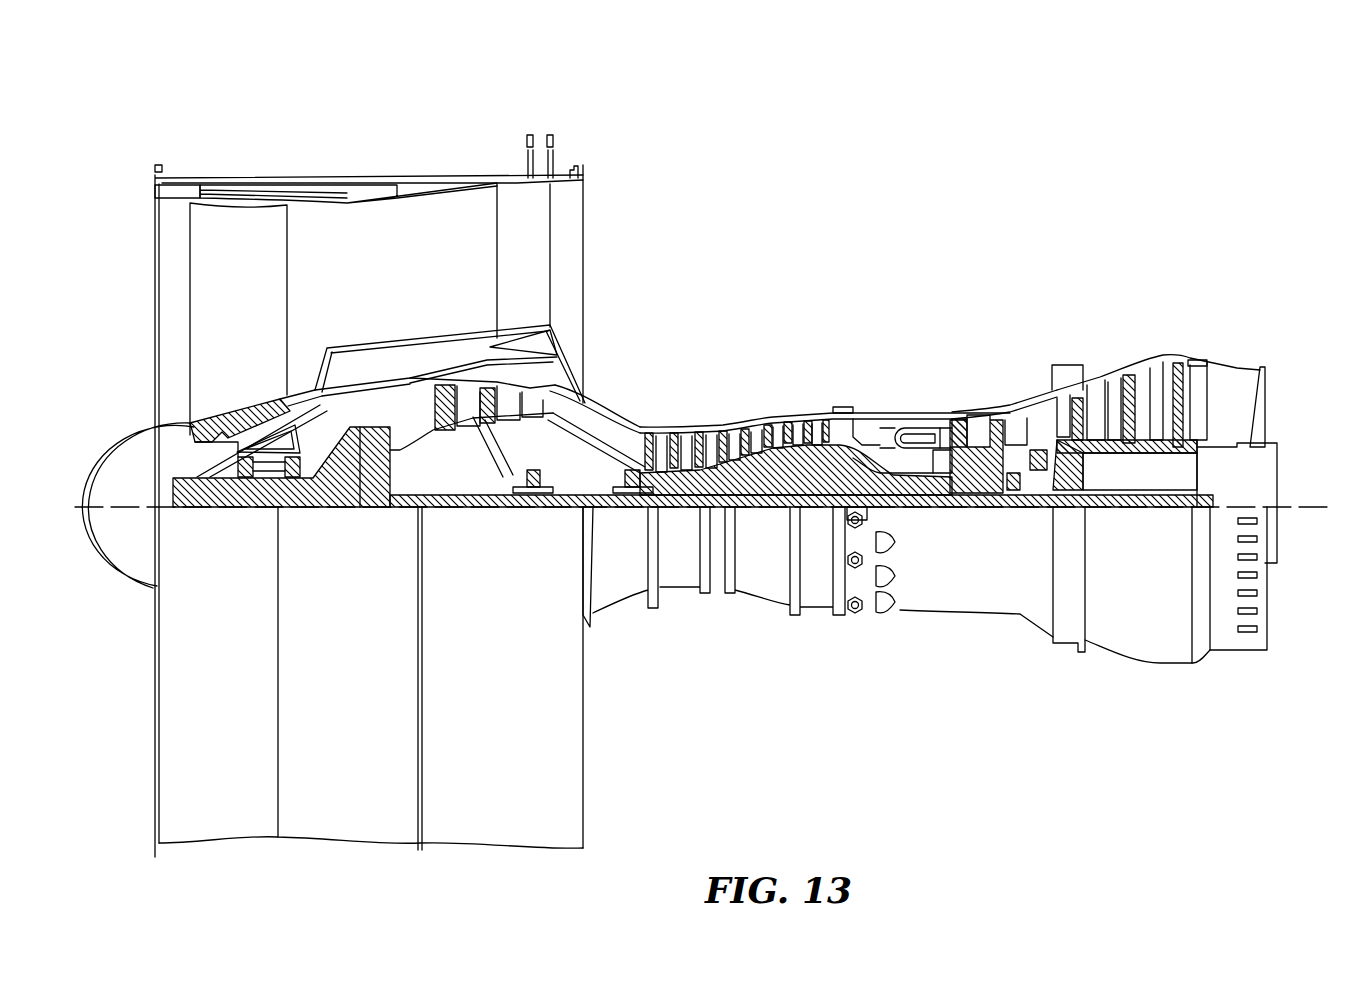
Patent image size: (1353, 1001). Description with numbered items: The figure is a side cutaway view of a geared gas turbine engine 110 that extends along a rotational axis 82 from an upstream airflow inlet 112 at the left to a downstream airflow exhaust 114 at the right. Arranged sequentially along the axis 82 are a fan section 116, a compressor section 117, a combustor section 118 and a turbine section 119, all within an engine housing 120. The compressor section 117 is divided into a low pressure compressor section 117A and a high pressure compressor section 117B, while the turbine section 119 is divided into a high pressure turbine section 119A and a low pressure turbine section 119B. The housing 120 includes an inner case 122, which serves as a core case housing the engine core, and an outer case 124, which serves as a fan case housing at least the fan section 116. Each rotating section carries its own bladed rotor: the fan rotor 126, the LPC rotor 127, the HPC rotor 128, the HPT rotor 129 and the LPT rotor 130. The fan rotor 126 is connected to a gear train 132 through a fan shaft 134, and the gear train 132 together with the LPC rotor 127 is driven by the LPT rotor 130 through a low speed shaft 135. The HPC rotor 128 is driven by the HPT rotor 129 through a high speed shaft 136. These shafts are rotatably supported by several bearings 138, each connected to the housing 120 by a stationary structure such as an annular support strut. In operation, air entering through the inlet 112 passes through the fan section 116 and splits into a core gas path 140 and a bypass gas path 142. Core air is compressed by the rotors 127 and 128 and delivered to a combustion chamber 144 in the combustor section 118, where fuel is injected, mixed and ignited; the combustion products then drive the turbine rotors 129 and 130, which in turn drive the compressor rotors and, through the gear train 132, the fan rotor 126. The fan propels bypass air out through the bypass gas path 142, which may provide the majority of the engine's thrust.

The geared gas turbine engine 110 is at (120, 156).
The airflow inlet 112 is at (155, 254).
The airflow exhaust 114 is at (1265, 402).
The fan section 116 is at (335, 151).
The compressor section 117 is at (818, 88).
The low pressure compressor section 117A is at (585, 138).
The high pressure compressor section 117B is at (612, 338).
The combustor section 118 is at (837, 336).
The turbine section 119 is at (952, 265).
The high pressure turbine section 119A is at (1033, 336).
The low pressure turbine section 119B is at (1220, 336).
The engine housing 120 is at (608, 628).
The inner case 122 is at (819, 612).
The outer case 124 is at (555, 850).
The fan rotor 126 is at (188, 424).
The LPC rotor 127 is at (478, 470).
The HPC rotor 128 is at (770, 475).
The HPT rotor 129 is at (982, 500).
The LPT rotor 130 is at (1130, 447).
The gear train 132 is at (365, 510).
The fan shaft 134 is at (222, 510).
The low speed shaft 135 is at (1150, 508).
The high speed shaft 136 is at (917, 495).
The bearings 138 is at (292, 480).
The core gas path 140 is at (603, 428).
The bypass gas path 142 is at (378, 282).
The combustion chamber 144 is at (902, 440).
The rotational axis 82 is at (1313, 512).